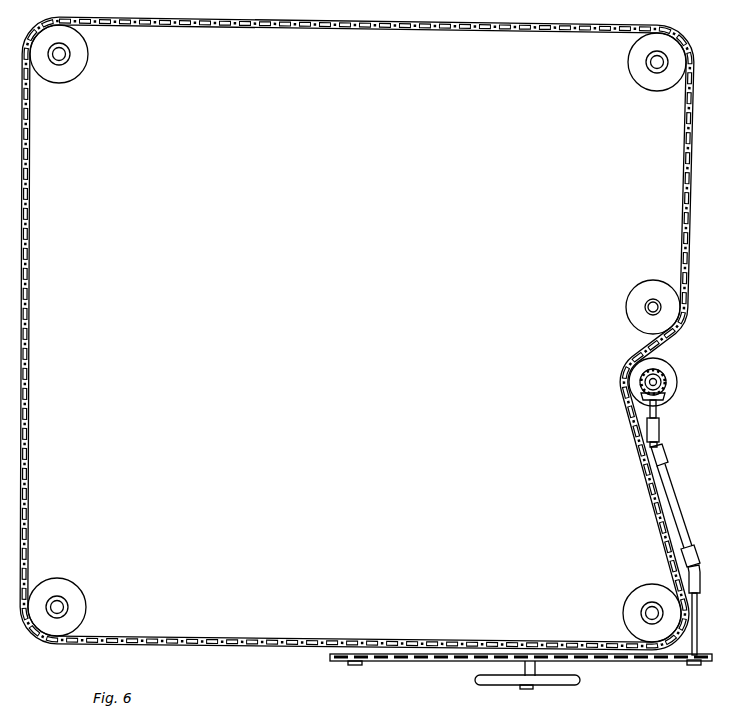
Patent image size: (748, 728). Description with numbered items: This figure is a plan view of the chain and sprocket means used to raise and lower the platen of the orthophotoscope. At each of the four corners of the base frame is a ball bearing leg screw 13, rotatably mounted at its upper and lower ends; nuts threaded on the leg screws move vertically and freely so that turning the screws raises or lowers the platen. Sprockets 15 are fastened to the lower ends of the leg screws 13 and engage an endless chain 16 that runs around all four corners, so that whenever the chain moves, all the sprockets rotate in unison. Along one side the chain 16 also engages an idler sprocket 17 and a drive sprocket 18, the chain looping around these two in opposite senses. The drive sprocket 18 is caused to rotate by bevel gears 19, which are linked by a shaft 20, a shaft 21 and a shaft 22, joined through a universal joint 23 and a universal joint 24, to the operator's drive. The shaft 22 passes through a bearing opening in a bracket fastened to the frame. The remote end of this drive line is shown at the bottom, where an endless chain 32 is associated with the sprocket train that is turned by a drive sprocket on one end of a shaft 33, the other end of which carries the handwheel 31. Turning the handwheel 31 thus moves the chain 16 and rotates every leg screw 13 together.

The leg screws 13 is at (63, 54).
The sprockets 15 is at (92, 80).
The endless chain 16 is at (26, 431).
The idler sprocket 17 is at (641, 298).
The drive sprocket 18 is at (661, 368).
The bevel gears 19 is at (666, 392).
The shaft 20 is at (658, 417).
The shaft 21 is at (681, 513).
The shaft 22 is at (698, 625).
The universal joint 23 is at (659, 441).
The universal joint 24 is at (699, 571).
The handwheel 31 is at (581, 682).
The endless chain 32 is at (400, 661).
The shaft 33 is at (533, 689).